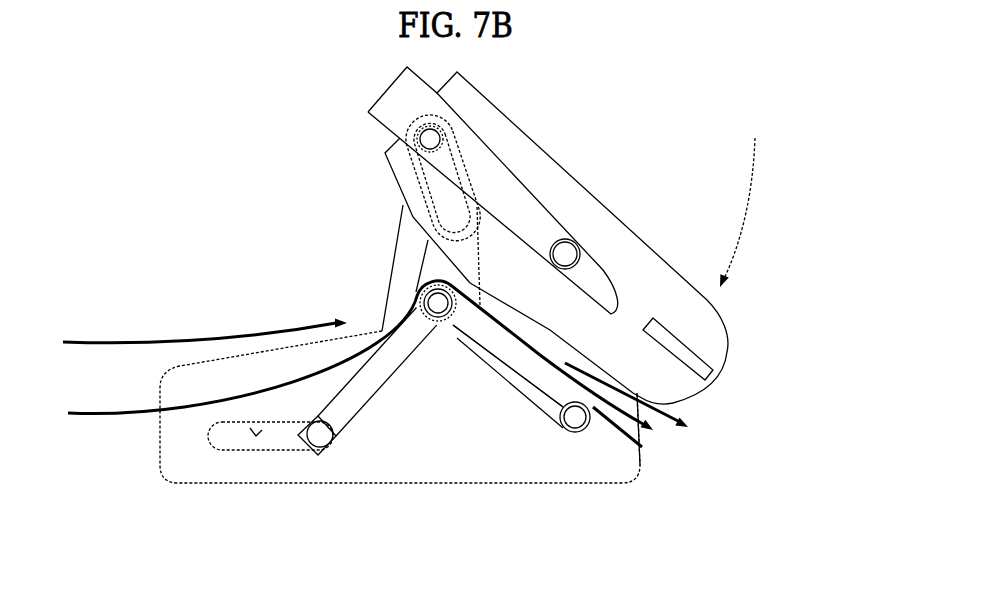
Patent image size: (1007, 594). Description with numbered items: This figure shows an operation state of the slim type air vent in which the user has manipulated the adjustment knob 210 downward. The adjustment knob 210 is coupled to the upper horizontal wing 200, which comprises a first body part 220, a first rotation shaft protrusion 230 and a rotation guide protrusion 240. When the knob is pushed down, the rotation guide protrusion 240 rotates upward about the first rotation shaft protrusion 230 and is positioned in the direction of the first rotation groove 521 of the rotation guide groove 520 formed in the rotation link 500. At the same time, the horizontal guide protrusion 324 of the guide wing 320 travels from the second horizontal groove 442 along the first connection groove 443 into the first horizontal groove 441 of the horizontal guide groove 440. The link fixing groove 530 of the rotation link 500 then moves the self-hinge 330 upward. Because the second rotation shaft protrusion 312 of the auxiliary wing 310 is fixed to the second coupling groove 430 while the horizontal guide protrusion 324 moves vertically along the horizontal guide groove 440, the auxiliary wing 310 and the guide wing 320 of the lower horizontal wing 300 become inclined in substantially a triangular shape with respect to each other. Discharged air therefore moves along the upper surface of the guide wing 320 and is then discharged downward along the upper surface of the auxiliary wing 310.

The upper horizontal wing 200 is at (656, 223).
The adjustment knob 210 is at (590, 185).
The first body part 220 is at (537, 192).
The first rotation shaft protrusion 230 is at (572, 255).
The rotation guide protrusion 240 is at (446, 138).
The lower horizontal wing 300 is at (496, 394).
The auxiliary wing 310 is at (522, 397).
The second rotation shaft protrusion 312 is at (585, 432).
The guide wing 320 is at (380, 390).
The horizontal guide protrusion 324 is at (315, 417).
The self-hinge 330 is at (483, 395).
The second coupling groove 430 is at (573, 419).
The horizontal guide groove 440 is at (288, 452).
The first horizontal groove 441 is at (318, 456).
The second horizontal groove 442 is at (210, 433).
The first connection groove 443 is at (257, 437).
The rotation link 500 is at (410, 257).
The rotation guide groove 520 is at (410, 198).
The first rotation groove 521 is at (385, 155).
The link fixing groove 530 is at (437, 326).